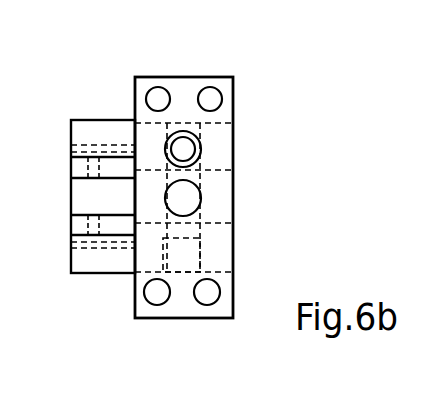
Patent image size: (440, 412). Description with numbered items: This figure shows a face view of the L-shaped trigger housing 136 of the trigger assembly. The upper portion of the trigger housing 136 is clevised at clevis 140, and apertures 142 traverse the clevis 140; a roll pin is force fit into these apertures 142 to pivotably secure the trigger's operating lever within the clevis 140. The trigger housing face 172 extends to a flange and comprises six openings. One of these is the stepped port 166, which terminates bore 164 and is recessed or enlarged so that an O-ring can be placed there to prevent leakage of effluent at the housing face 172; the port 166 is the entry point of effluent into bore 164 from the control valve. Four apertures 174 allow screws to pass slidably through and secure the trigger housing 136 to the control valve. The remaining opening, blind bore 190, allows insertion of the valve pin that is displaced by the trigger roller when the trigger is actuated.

The trigger housing 136 is at (233, 107).
The clevis 140 is at (72, 208).
The apertures 142 is at (93, 165).
The bore 164 is at (196, 158).
The stepped port 166 is at (191, 146).
The housing face 172 is at (227, 258).
The apertures 174 is at (157, 88).
The blind bore 190 is at (197, 202).